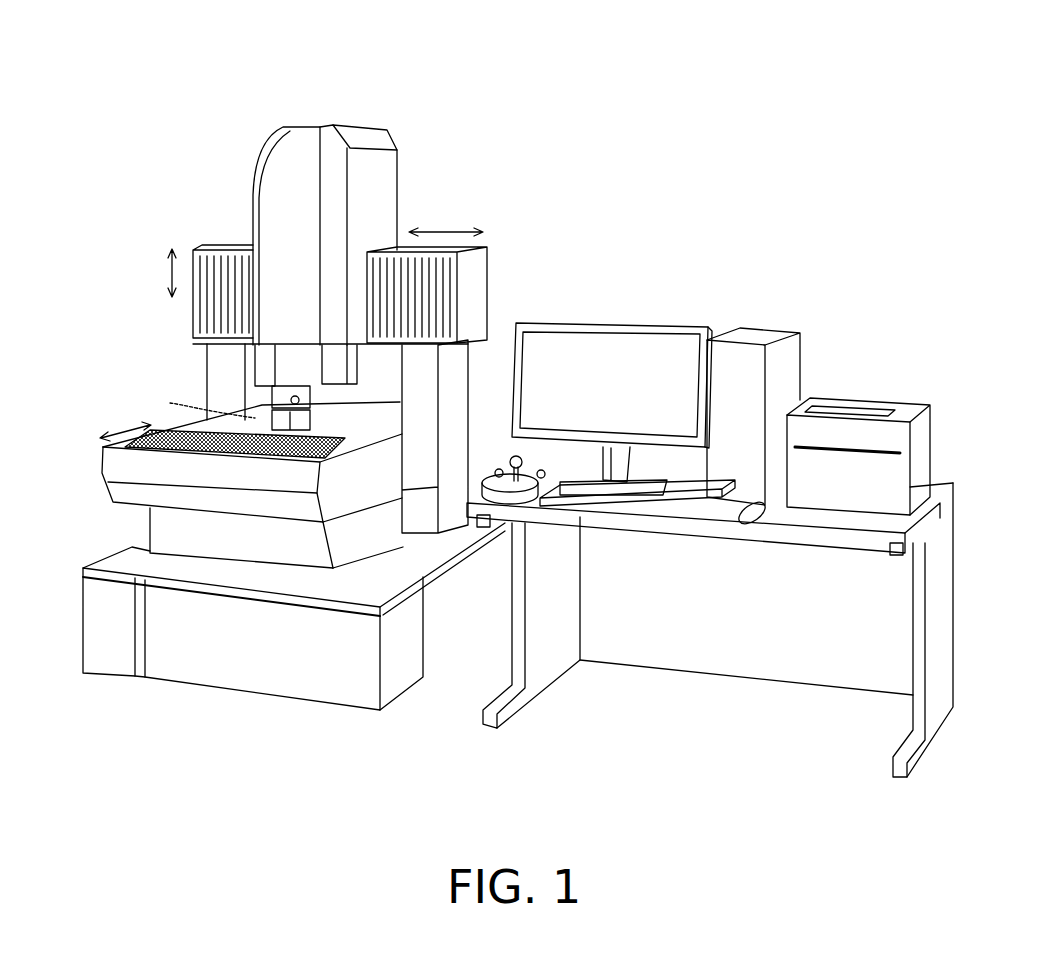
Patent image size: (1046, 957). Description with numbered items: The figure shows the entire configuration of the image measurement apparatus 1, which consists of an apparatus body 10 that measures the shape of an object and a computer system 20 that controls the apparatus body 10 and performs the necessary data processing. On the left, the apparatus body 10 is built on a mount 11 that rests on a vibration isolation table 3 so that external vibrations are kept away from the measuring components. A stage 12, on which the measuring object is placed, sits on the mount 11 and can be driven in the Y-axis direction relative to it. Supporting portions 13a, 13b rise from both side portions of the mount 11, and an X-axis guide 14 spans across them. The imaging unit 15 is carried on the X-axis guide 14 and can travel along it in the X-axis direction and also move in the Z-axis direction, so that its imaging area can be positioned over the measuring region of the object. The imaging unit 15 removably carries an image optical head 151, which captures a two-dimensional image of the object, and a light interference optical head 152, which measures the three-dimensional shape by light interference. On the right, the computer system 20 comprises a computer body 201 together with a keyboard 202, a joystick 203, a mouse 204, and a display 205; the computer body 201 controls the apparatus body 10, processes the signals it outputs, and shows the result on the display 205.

The image measurement apparatus 1 is at (677, 92).
The apparatus body 10 is at (410, 91).
The imaging unit 15 is at (253, 170).
The X-axis guide 14 is at (223, 243).
The supporting portion 13a is at (468, 380).
The supporting portion 13b is at (210, 398).
The image optical head 151 is at (258, 372).
The light interference optical head 152 is at (290, 392).
The stage 12 is at (338, 420).
The mount 11 is at (122, 462).
The vibration isolation table 3 is at (277, 657).
The computer system 20 is at (749, 283).
The computer body 201 is at (772, 325).
The keyboard 202 is at (653, 520).
The joystick 203 is at (543, 525).
The mouse 204 is at (743, 523).
The display 205 is at (612, 327).